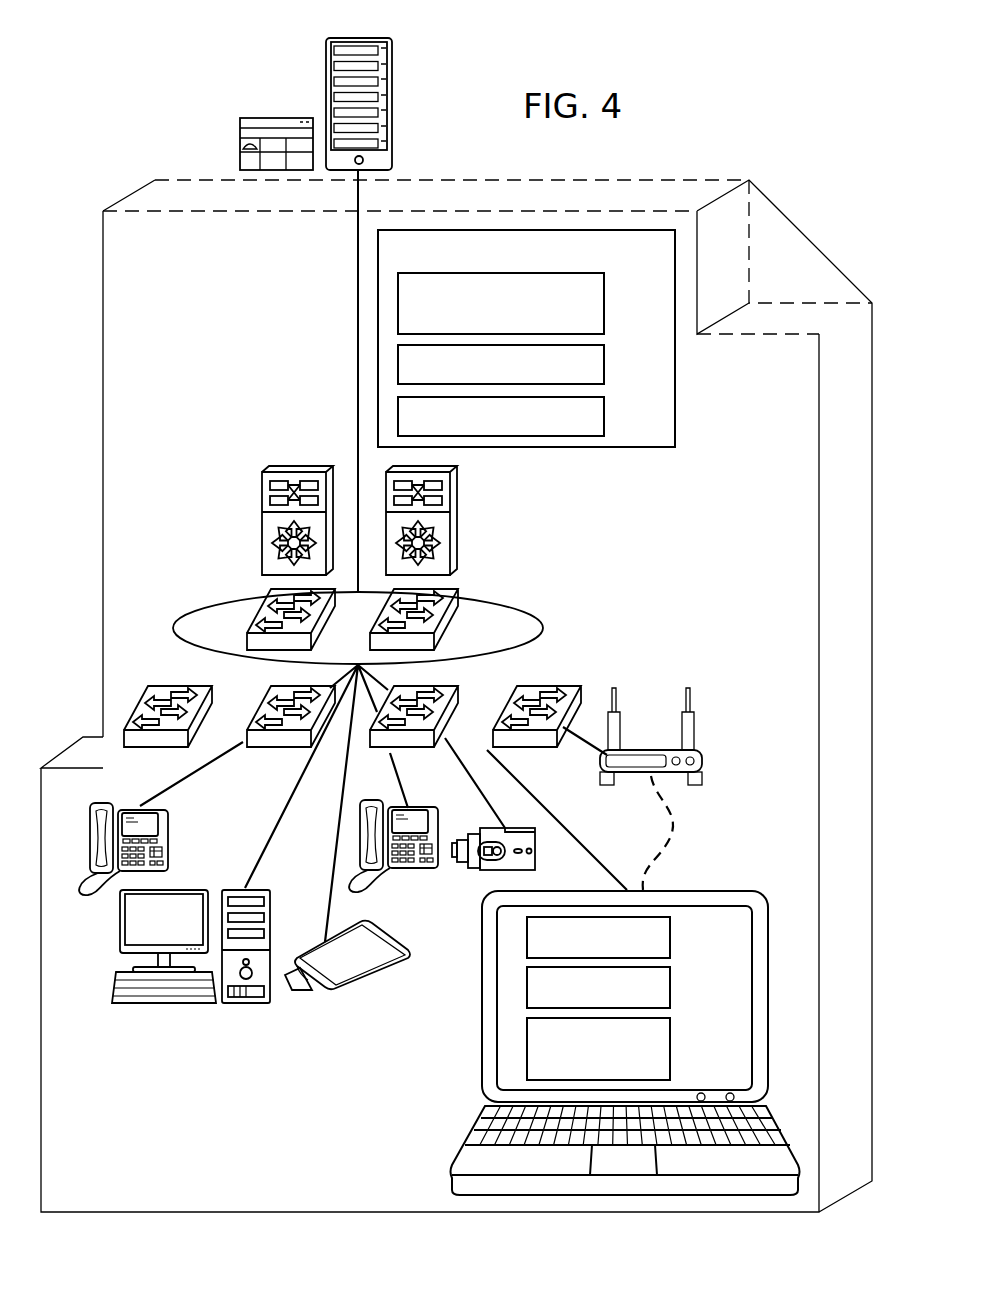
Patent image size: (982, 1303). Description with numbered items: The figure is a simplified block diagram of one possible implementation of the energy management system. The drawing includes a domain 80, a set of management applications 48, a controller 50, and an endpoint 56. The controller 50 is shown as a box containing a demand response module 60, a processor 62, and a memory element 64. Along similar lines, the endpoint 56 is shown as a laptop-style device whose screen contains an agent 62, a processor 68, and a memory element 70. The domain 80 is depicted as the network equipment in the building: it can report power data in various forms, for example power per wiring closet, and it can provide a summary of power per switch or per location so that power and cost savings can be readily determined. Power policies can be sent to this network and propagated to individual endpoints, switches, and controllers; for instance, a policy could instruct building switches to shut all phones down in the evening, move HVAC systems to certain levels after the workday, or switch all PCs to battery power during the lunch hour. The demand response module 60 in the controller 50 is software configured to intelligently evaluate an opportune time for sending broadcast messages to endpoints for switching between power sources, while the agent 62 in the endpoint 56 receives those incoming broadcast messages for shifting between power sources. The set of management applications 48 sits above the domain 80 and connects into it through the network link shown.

The set of management applications 48 is at (326, 103).
The controller 50 is at (526, 371).
The endpoint 56 is at (609, 1043).
The demand response module 60 is at (606, 303).
The processor 62 is at (606, 364).
The memory element 64 is at (606, 416).
The processor 68 is at (670, 988).
The memory element 70 is at (670, 1048).
The domain 80 is at (216, 528).